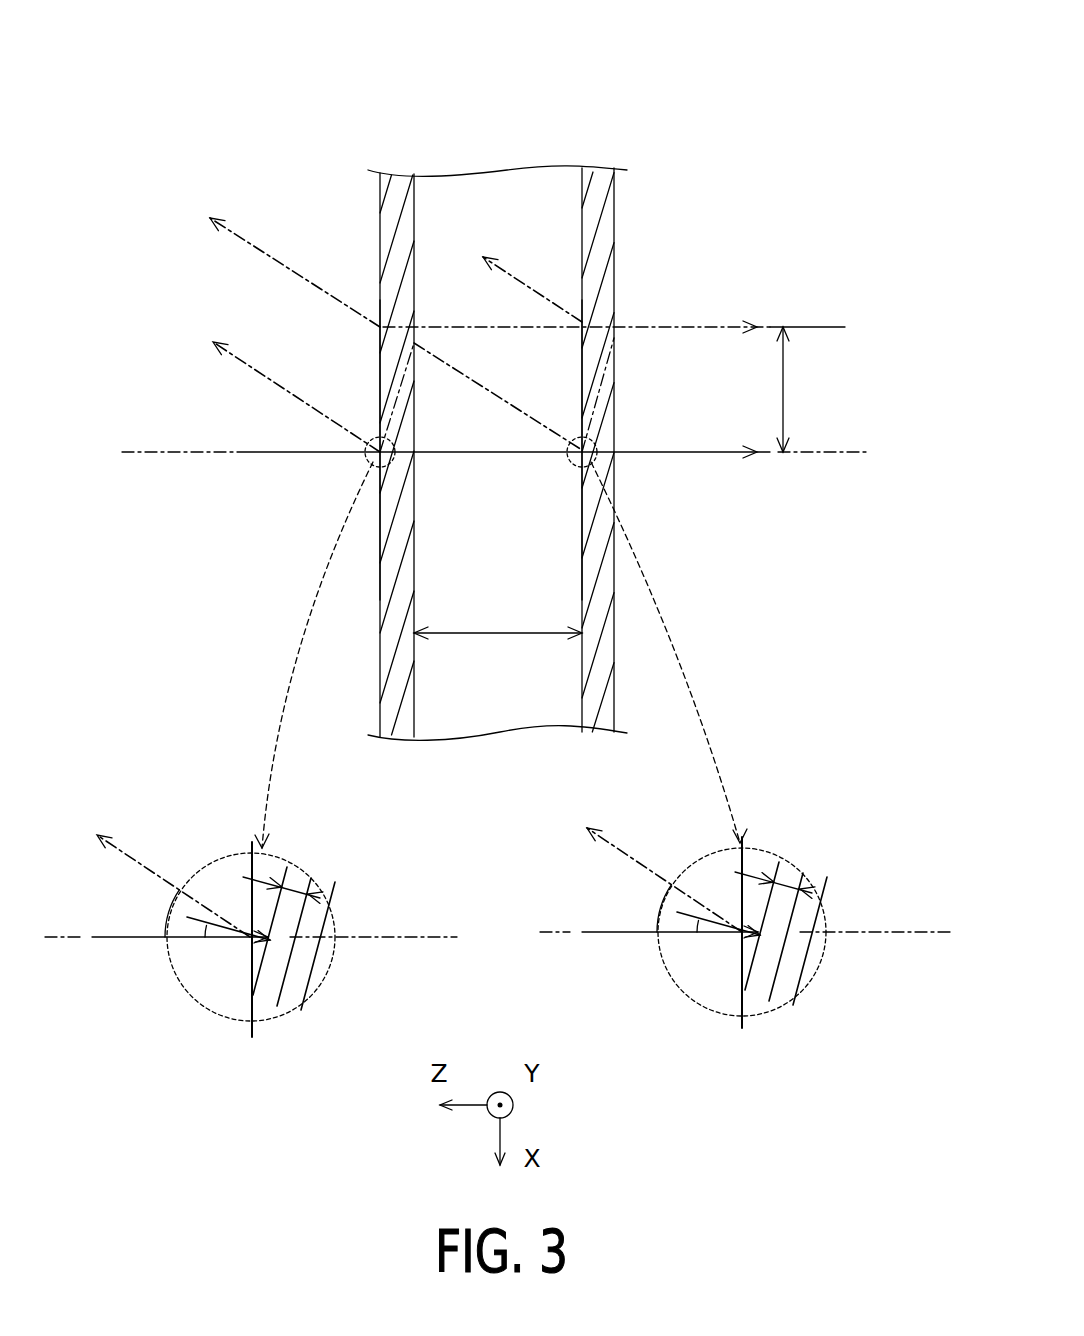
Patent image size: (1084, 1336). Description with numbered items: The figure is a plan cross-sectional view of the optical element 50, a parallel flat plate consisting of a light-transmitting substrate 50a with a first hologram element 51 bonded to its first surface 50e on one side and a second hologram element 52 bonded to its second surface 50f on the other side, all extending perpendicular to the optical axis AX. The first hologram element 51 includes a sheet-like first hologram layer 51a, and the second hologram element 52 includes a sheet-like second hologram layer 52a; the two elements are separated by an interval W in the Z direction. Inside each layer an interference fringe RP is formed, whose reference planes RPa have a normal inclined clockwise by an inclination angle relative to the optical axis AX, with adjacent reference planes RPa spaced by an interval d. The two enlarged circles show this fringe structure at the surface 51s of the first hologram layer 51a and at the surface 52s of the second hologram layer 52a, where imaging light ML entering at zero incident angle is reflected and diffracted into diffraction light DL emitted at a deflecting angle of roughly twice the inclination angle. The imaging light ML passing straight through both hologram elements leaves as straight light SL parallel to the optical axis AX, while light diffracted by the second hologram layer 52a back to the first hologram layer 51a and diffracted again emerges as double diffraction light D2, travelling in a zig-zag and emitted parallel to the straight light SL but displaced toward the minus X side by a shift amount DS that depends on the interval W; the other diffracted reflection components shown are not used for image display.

The optical element 50 is at (652, 86).
The substrate 50a is at (495, 190).
The first surface 50e is at (412, 250).
The second surface 50f is at (616, 243).
The first hologram element 51 is at (396, 178).
The first hologram layer 51a is at (292, 831).
The surface of the first hologram layer 51s is at (378, 226).
The second hologram element 52 is at (600, 176).
The second hologram layer 52a is at (782, 824).
The surface of the second hologram layer 52s is at (583, 214).
The interference fringe RP is at (403, 403).
The reference plane RPa is at (300, 902).
The straight light SL is at (695, 462).
The imaging light ML is at (265, 462).
The optical axis AX is at (815, 462).
The double diffraction light D2 is at (452, 322).
The shift amount DS is at (807, 389).
The interval between the first hologram element and the second hologram element W is at (498, 622).
The diffraction light DL is at (262, 255).
The interval d is at (300, 882).